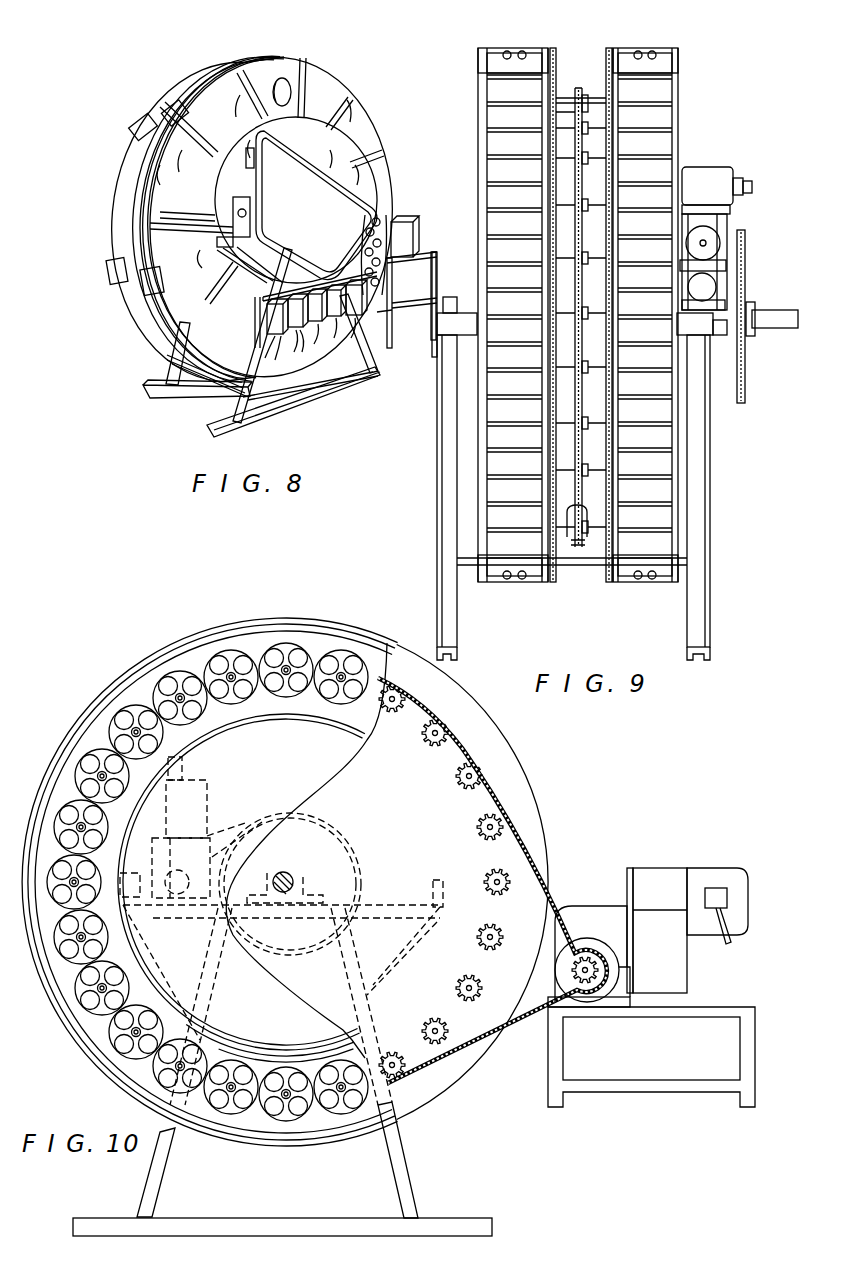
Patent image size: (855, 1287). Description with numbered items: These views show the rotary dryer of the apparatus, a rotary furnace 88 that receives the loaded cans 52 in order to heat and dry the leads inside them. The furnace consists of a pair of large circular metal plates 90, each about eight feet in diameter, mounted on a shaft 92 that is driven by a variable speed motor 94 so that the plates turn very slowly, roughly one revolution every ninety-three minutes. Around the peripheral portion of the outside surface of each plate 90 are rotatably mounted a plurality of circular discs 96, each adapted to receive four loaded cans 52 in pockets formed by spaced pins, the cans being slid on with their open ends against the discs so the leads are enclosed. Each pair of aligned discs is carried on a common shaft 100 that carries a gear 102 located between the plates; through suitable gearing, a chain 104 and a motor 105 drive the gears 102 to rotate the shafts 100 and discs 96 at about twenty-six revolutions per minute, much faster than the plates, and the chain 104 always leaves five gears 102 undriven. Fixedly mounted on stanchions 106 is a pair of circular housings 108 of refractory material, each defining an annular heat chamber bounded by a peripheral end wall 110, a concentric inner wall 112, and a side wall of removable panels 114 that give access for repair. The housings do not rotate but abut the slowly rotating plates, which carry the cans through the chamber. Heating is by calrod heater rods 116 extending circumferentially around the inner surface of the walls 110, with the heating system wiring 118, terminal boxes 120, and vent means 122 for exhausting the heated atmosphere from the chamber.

In FIG. 9, the loaded can 52 is at (653, 517).
In FIG. 10, the loaded can 52 is at (228, 652).
In FIG. 8, the rotary furnace 88 is at (112, 124).
In FIG. 10, the rotary furnace 88 is at (158, 637).
In FIG. 10, the circular metal plate 90 is at (513, 781).
In FIG. 9, the shaft 92 is at (782, 318).
In FIG. 10, the shaft 92 is at (288, 878).
In FIG. 9, the variable speed motor 94 is at (720, 168).
In FIG. 10, the variable speed motor 94 is at (205, 763).
In FIG. 9, the circular disc 96 is at (617, 543).
In FIG. 10, the circular disc 96 is at (303, 650).
In FIG. 9, the common shaft 100 is at (565, 128).
In FIG. 10, the common shaft 100 is at (230, 676).
In FIG. 9, the gear 102 is at (580, 548).
In FIG. 10, the gear 102 is at (462, 773).
In FIG. 9, the chain 104 is at (570, 515).
In FIG. 10, the chain 104 is at (527, 844).
In FIG. 10, the motor 105 is at (720, 877).
In FIG. 8, the stanchion 106 is at (255, 388).
In FIG. 9, the stanchion 106 is at (448, 503).
In FIG. 10, the stanchion 106 is at (158, 1178).
In FIG. 8, the circular housing 108 is at (188, 328).
In FIG. 8, the peripheral end wall 110 is at (123, 187).
In FIG. 9, the peripheral end wall 110 is at (527, 50).
In FIG. 10, the peripheral end wall 110 is at (93, 709).
In FIG. 8, the inner wall 112 is at (343, 163).
In FIG. 10, the inner wall 112 is at (348, 723).
In FIG. 8, the removable panel 114 is at (328, 96).
In FIG. 9, the rod 116 is at (507, 58).
In FIG. 8, the wiring 118 is at (214, 78).
In FIG. 8, the terminal box 120 is at (168, 107).
In FIG. 8, the vent means 122 is at (288, 88).